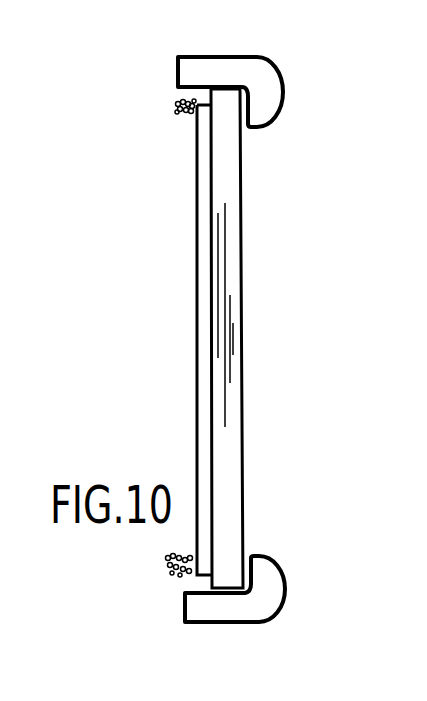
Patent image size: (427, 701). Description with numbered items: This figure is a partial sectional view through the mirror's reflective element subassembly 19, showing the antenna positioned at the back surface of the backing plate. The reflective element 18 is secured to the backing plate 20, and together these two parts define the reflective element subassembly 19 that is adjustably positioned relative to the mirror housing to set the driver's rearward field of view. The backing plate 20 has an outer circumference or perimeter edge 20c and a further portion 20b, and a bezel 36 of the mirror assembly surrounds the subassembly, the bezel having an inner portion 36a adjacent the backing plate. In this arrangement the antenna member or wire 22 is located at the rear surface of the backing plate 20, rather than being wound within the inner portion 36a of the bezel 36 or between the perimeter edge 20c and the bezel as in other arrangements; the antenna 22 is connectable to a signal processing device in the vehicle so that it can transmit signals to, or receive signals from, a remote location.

The reflective element 18 is at (227, 198).
The reflective element subassembly 19 is at (306, 338).
The backing plate 20 is at (146, 340).
The plate flange 20b is at (195, 253).
The outer perimeter edge 20c is at (199, 107).
The antenna member 22 is at (165, 113).
The bezel 36 is at (252, 55).
The inner portion of bezel 36a is at (212, 67).